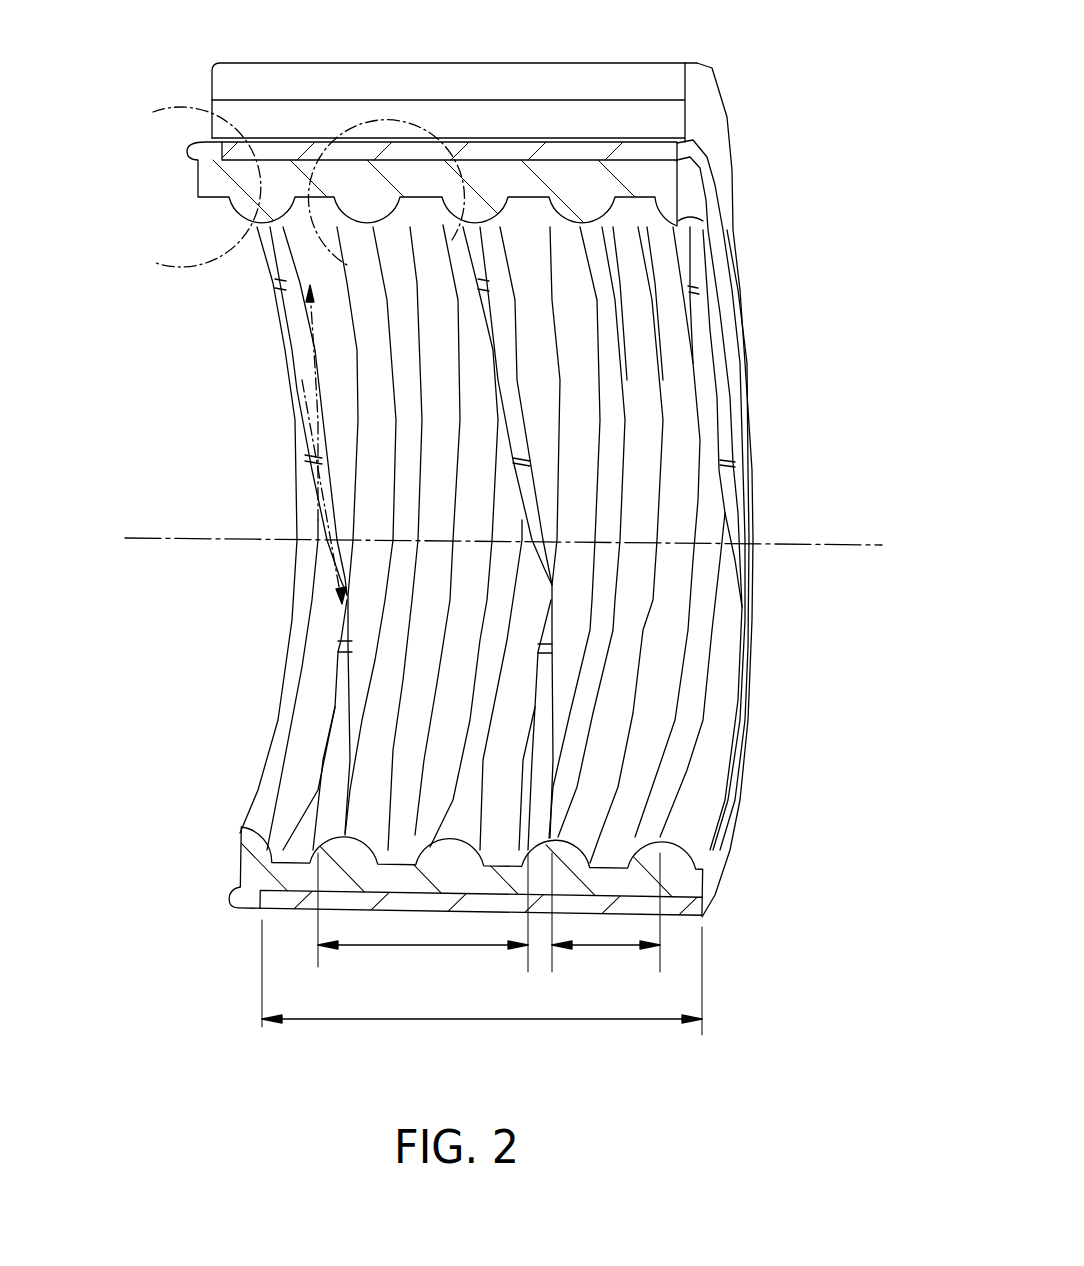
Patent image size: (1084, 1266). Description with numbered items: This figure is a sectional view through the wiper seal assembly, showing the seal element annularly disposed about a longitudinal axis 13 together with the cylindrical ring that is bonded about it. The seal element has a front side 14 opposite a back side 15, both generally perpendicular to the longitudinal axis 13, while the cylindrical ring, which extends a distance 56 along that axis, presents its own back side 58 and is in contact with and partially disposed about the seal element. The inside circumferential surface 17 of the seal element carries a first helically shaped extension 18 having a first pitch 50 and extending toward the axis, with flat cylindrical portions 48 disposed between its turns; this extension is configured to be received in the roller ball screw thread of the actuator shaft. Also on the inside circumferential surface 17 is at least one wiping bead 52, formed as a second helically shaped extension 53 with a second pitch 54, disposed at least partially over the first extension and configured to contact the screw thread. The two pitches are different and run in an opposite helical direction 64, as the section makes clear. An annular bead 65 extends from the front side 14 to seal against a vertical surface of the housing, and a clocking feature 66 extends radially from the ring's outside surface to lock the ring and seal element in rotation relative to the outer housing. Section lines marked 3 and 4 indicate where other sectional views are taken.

The clocking feature 66 is at (574, 62).
The front side 14 is at (197, 180).
The annular bead 65 is at (193, 150).
The back side 58 is at (707, 165).
The back side 15 is at (698, 207).
The section line 4- 4 is at (194, 189).
The section line 3- 3 is at (343, 269).
The opposite helical direction 64 is at (318, 461).
The wiping bead 52 is at (258, 725).
The second helically shaped extension 53 is at (340, 760).
The first helically shaped extension 18 is at (732, 545).
The flat cylindrical portions 48 is at (668, 637).
The inside circumferential surface 17 is at (677, 437).
The longitudinal axis 13 is at (852, 543).
The second pitch 54 is at (423, 945).
The first pitch 50 is at (608, 947).
The distance 56 is at (480, 1020).